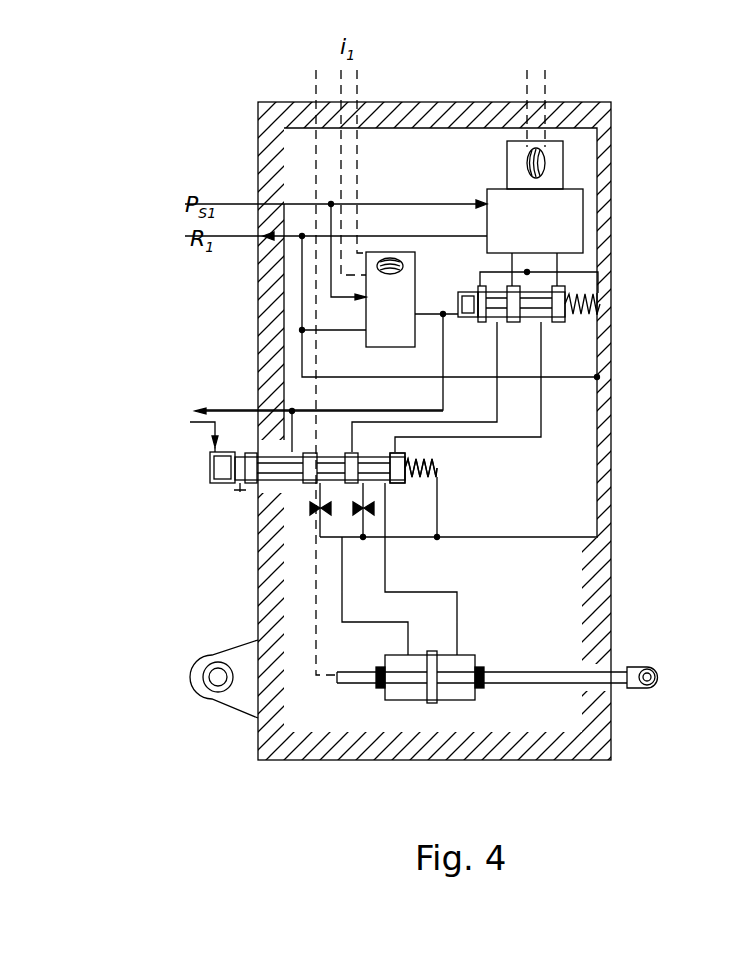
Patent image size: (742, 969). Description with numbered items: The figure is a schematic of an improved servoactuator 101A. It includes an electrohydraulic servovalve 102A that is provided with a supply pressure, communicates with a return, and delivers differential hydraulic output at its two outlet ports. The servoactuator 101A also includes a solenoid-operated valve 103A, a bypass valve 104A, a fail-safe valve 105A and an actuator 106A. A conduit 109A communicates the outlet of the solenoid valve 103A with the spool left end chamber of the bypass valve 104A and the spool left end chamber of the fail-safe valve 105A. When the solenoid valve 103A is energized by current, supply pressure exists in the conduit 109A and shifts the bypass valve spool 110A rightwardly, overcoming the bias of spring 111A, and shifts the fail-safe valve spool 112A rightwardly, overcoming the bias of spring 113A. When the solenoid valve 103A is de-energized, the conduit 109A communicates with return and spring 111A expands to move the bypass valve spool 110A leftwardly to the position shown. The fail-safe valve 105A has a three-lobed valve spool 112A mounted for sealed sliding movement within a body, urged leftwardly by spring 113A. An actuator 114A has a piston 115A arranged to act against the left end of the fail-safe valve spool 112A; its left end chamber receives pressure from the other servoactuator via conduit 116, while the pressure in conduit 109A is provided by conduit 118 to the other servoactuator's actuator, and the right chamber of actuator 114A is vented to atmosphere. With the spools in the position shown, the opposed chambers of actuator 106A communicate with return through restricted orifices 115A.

The servoactuator 101A is at (266, 72).
The electrohydraulic servovalve 102A is at (573, 173).
The solenoid-operated valve 103A is at (397, 325).
The bypass valve 104A is at (577, 284).
The fail-safe valve 105A is at (300, 522).
The actuator 106A is at (464, 649).
The conduit 109A is at (441, 310).
The bypass valve spool 110A is at (578, 312).
The spring 111A is at (604, 300).
The fail-safe valve spool 112A is at (399, 466).
The spring 113A is at (414, 474).
The actuator 114A is at (223, 492).
The piston 115A is at (210, 463).
The conduit 116 is at (190, 426).
The conduit 118 is at (203, 402).